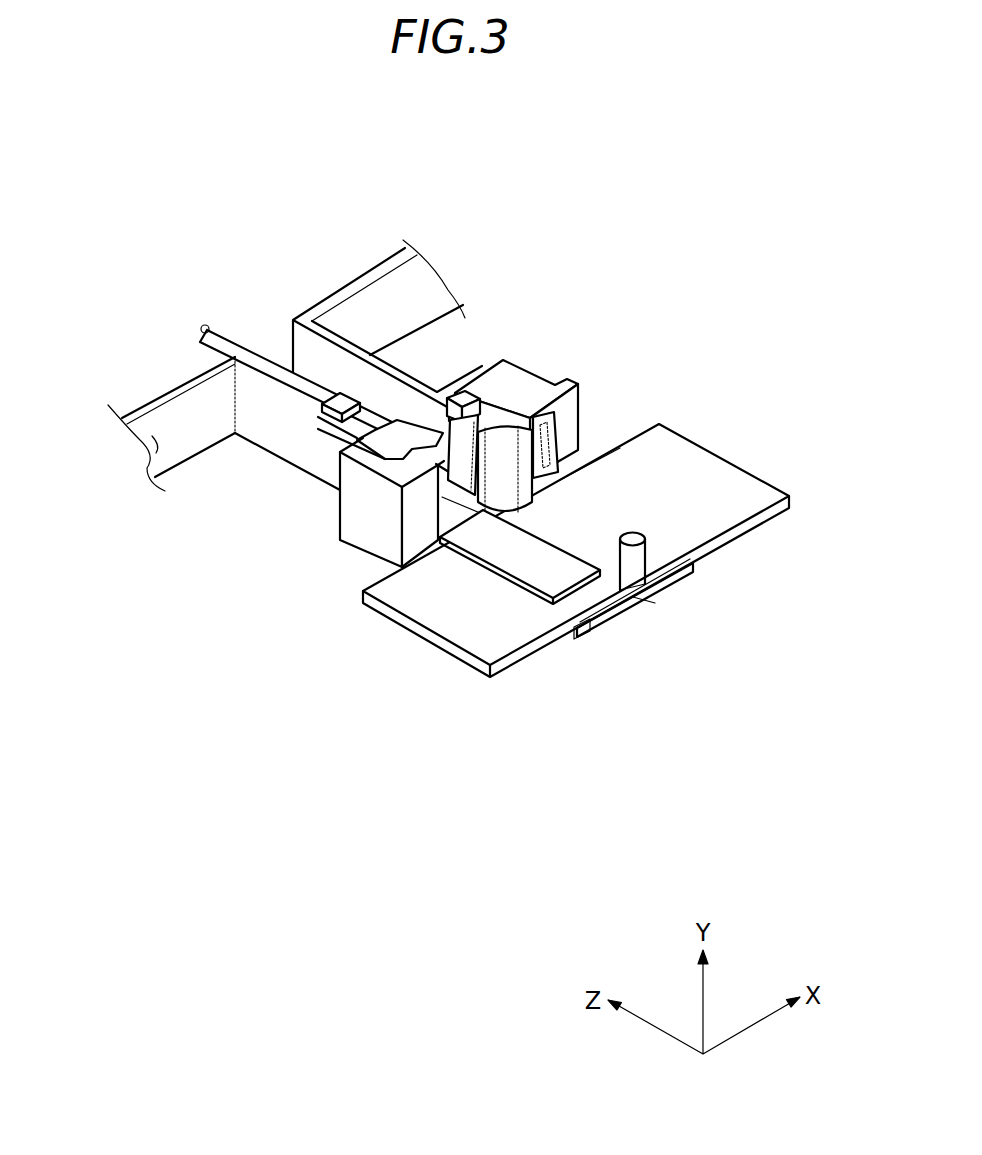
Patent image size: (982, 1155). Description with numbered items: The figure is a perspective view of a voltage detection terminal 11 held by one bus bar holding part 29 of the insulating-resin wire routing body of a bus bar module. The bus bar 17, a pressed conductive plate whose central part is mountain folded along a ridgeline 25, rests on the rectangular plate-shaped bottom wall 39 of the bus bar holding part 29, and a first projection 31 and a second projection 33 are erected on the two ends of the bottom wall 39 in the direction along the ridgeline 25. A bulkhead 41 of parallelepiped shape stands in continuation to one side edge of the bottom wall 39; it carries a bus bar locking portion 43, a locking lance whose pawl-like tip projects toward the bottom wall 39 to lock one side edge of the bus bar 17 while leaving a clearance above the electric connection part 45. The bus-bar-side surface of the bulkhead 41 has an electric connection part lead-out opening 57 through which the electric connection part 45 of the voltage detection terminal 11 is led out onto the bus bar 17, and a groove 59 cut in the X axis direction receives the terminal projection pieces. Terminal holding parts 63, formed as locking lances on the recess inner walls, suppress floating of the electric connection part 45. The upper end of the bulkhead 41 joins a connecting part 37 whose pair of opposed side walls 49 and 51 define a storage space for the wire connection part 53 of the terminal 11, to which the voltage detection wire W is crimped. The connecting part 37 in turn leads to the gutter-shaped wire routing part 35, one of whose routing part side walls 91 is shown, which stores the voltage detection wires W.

The voltage detection terminal 11 is at (612, 570).
The bus bar 17 is at (772, 476).
The ridgeline 25 is at (590, 535).
The bus bar holding part 29 is at (657, 603).
The first projection 31 is at (640, 572).
The second projection 33 is at (522, 492).
The wire routing part 35 is at (189, 470).
The connecting part 37 is at (291, 474).
The bottom wall 39 is at (688, 583).
The bulkhead 41 is at (549, 383).
The bus bar locking portion 43 is at (545, 470).
The electric connection part 45 is at (533, 568).
The side wall 49 is at (340, 362).
The side wall 51 is at (199, 470).
The wire connection part 53 is at (380, 402).
The electric connection part lead-out opening 57 is at (458, 530).
The groove 59 is at (458, 395).
The terminal holding part 63 is at (466, 463).
The routing part side wall 91 is at (158, 458).
The voltage detection wire W is at (222, 325).